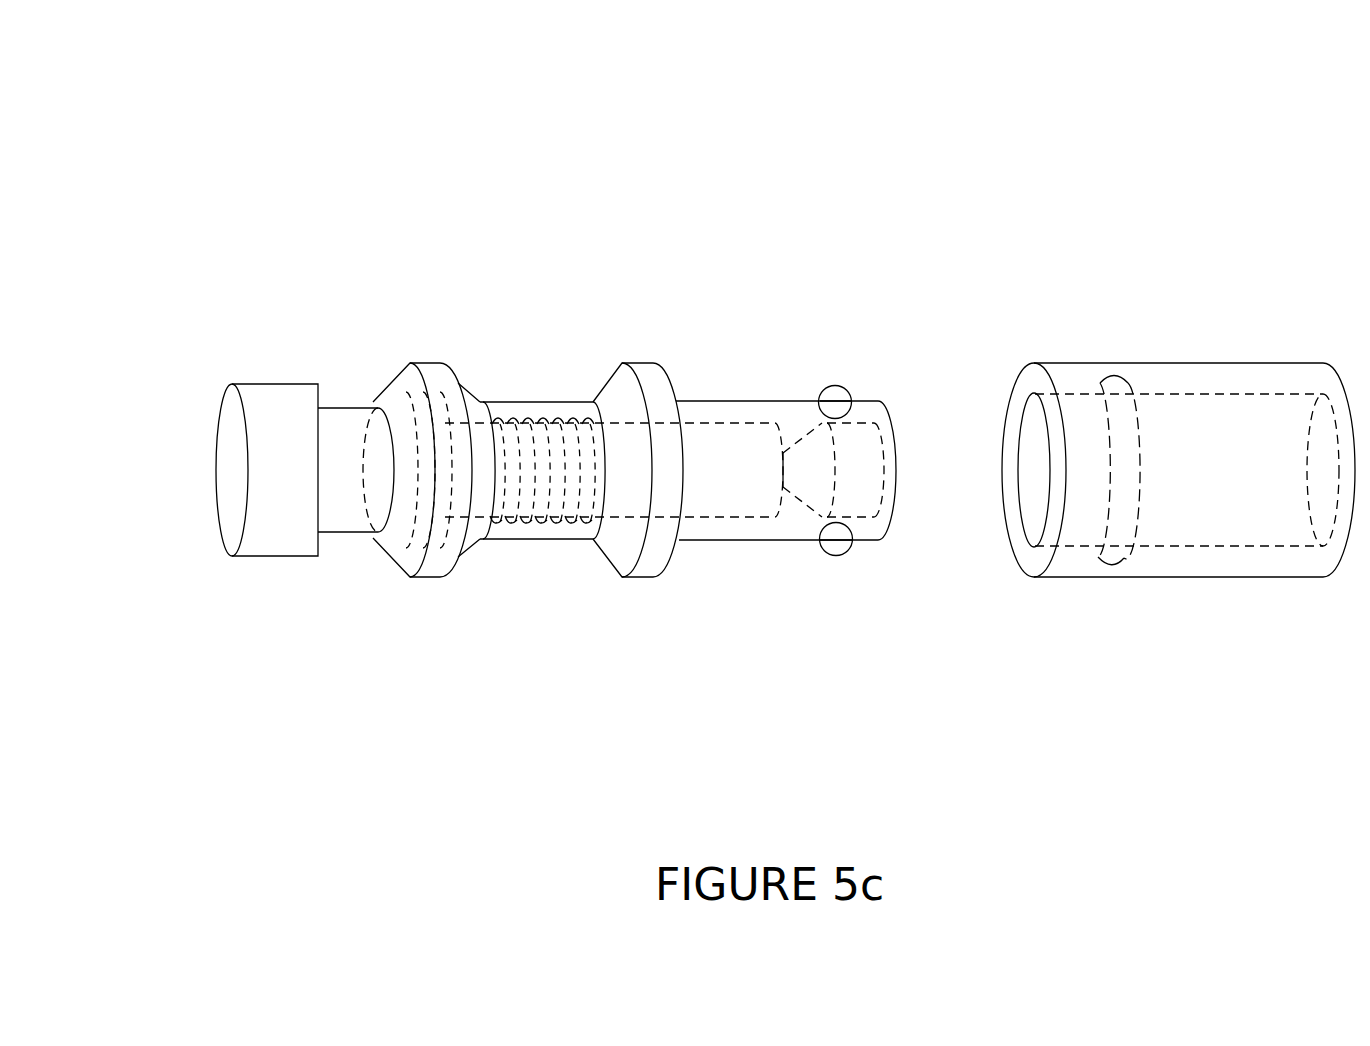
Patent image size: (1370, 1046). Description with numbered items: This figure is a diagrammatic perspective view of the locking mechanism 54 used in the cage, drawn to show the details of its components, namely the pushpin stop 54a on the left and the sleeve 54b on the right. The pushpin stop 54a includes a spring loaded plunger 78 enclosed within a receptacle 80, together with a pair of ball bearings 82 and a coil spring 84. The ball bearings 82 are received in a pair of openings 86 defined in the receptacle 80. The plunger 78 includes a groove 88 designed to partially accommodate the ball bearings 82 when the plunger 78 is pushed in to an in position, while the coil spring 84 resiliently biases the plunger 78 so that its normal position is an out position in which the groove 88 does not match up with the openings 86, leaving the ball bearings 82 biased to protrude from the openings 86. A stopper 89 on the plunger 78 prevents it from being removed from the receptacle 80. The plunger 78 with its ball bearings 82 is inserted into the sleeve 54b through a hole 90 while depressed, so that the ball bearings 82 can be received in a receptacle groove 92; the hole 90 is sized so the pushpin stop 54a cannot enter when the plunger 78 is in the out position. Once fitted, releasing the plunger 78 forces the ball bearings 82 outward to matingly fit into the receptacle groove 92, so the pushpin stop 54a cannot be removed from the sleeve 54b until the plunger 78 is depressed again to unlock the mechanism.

The locking mechanism 54 is at (707, 223).
The pushpin stop 54a is at (408, 600).
The sleeve 54b is at (1213, 362).
The spring loaded plunger 78 is at (272, 384).
The receptacle 80 is at (433, 362).
The stopper 89 is at (400, 395).
The coil spring 84 is at (557, 420).
The groove 88 is at (797, 437).
The ball bearings 82 is at (834, 385).
The openings 86 is at (851, 400).
The hole 90 is at (1036, 456).
The receptacle groove 92 is at (1113, 377).